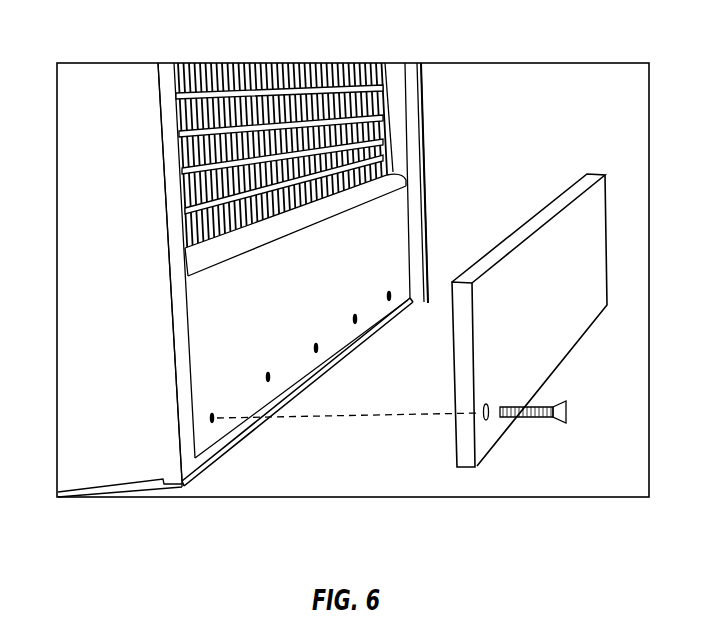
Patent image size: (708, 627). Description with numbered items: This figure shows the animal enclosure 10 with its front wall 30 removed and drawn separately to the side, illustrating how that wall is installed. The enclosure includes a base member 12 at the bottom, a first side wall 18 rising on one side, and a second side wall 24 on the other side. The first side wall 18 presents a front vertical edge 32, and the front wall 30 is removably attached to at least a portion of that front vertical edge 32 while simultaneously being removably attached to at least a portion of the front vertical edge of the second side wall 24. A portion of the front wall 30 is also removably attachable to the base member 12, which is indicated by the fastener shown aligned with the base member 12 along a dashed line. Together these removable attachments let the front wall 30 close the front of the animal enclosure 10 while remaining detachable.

The animal enclosure 10 is at (590, 57).
The base member 12 is at (336, 337).
The first side wall 18 is at (77, 398).
The second side wall 24 is at (420, 145).
The front wall 30 is at (553, 355).
The front vertical edge 32 is at (180, 337).